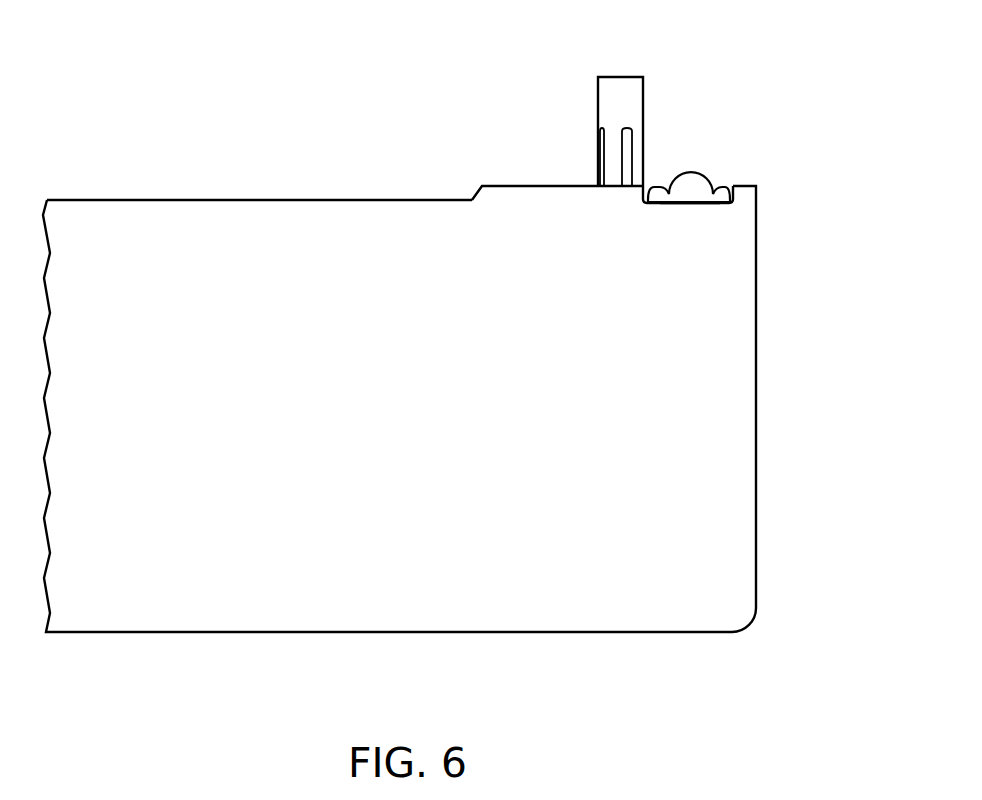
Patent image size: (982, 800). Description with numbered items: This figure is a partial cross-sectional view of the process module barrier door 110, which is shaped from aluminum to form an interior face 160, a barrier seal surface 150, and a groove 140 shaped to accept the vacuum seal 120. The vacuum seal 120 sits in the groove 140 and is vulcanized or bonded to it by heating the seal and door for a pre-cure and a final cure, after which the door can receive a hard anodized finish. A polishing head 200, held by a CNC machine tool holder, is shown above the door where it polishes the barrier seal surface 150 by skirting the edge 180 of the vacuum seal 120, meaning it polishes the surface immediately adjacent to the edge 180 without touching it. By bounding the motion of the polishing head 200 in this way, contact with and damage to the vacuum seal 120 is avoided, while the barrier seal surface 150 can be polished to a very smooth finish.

The process module barrier door 110 is at (780, 480).
The vacuum seal 120 is at (698, 184).
The groove 140 is at (705, 215).
The barrier seal surface 150 is at (492, 186).
The interior face 160 is at (363, 200).
The edge 180 is at (651, 186).
The polishing head 200 is at (610, 77).